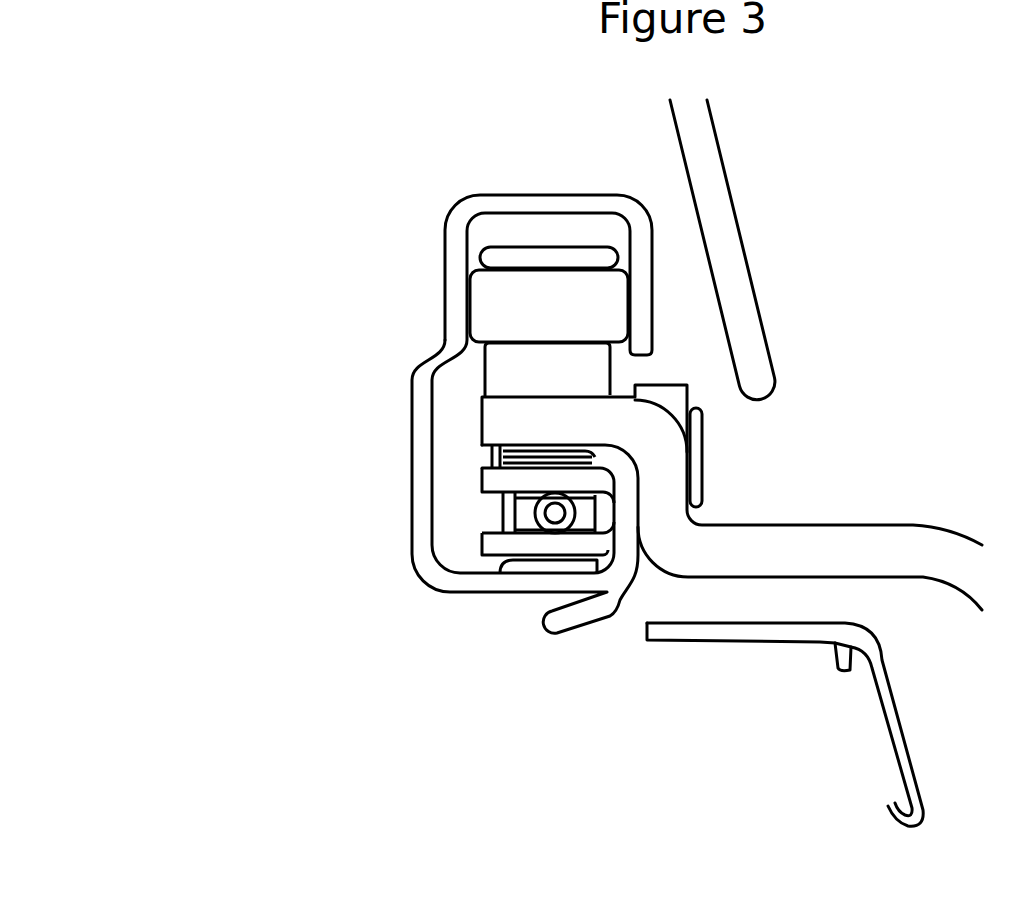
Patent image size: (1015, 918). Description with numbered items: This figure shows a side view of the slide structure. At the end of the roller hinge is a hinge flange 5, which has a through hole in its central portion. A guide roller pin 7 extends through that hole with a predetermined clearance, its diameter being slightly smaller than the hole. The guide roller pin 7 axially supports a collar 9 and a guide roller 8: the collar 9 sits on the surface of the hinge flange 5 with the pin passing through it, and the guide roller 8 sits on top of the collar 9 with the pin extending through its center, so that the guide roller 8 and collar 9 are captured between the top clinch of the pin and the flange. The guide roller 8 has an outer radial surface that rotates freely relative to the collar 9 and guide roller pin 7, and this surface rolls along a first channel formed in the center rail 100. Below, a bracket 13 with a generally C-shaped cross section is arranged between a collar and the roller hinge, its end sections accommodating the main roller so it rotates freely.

The center rail 100 is at (445, 227).
The guide roller pin 7 is at (596, 258).
The guide roller 8 is at (588, 306).
The collar 9 is at (612, 371).
The hinge flange 5 is at (637, 437).
The bracket 13 is at (488, 542).